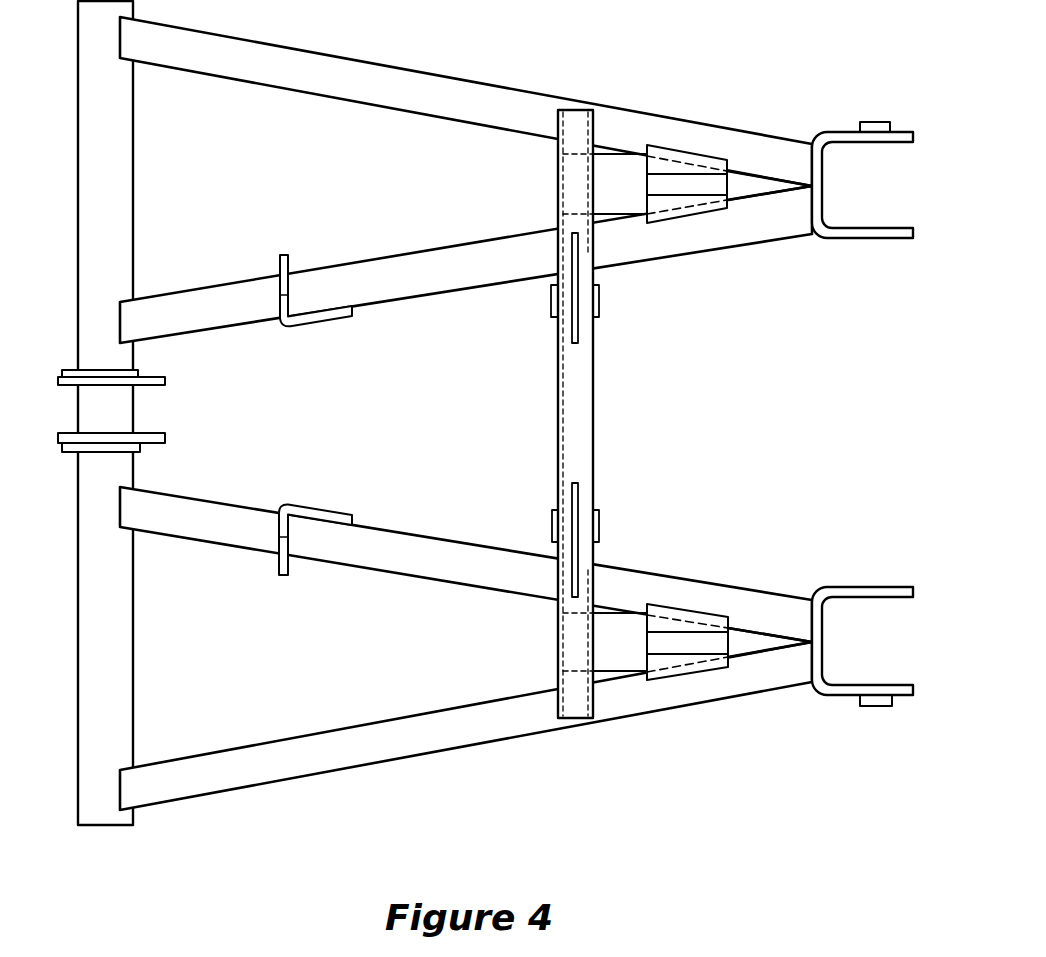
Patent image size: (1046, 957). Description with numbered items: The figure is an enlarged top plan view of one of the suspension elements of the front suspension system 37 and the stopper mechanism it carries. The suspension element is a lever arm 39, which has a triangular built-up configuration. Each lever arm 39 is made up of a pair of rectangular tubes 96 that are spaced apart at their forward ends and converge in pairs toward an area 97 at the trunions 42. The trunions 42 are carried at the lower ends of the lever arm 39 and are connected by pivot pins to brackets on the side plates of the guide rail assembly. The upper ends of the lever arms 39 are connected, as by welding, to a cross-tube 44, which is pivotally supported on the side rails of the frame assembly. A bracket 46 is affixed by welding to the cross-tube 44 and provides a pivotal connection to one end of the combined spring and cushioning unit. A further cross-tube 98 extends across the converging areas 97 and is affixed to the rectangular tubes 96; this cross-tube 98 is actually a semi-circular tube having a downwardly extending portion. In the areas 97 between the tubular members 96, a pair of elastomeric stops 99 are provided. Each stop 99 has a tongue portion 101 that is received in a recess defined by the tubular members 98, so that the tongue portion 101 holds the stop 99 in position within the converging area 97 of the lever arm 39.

The support frame 37 is at (516, 438).
The lever arm 39 is at (466, 438).
The trunion 42 is at (860, 228).
The cross-tube 44 is at (120, 683).
The bracket 46 is at (165, 431).
The rectangular tube 96 is at (420, 87).
The area 97 is at (762, 175).
The cross-tube 98 is at (580, 420).
The elastomeric stop 99 is at (693, 218).
The tongue portion 101 is at (615, 173).